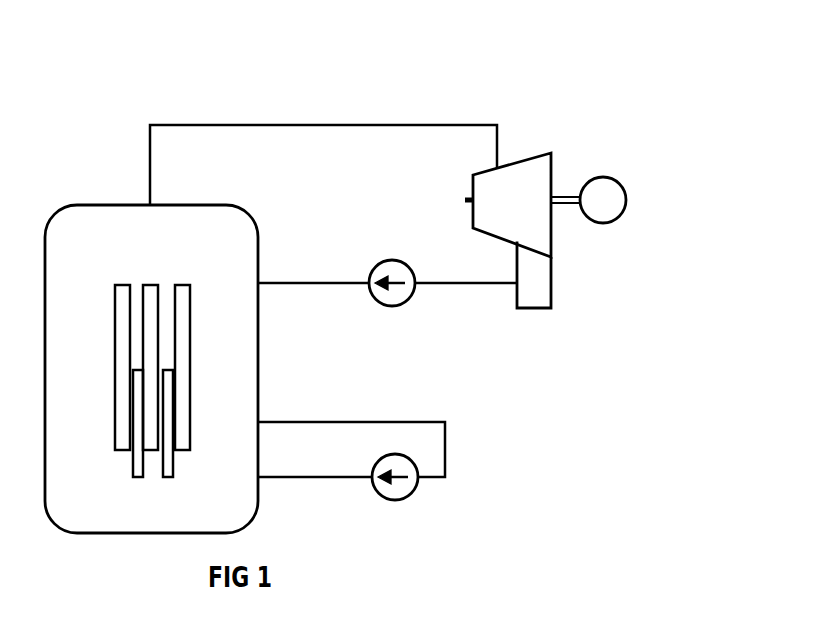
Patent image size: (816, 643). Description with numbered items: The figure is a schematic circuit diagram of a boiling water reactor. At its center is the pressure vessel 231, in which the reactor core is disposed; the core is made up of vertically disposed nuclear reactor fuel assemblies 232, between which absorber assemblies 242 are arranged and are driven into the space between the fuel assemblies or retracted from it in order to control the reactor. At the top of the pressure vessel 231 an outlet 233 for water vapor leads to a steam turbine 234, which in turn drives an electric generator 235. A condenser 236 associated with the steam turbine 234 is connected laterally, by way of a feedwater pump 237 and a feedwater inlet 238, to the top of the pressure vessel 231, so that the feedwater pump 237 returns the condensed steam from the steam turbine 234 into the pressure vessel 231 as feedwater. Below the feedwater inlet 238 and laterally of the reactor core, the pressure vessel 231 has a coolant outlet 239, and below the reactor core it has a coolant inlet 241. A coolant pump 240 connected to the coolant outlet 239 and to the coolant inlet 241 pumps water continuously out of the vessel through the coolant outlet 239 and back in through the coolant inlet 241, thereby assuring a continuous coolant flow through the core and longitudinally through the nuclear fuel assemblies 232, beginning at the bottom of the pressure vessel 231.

The pressure vessel 231 is at (112, 535).
The nuclear reactor fuel assemblies 232 is at (185, 381).
The outlet for water vapor 233 is at (200, 124).
The steam turbine 234 is at (523, 158).
The electric generator 235 is at (594, 183).
The condenser 236 is at (530, 310).
The feedwater pump 237 is at (383, 259).
The feedwater inlet 238 is at (308, 286).
The coolant outlet 239 is at (316, 420).
The coolant pump 240 is at (385, 502).
The coolant inlet 241 is at (308, 480).
The absorber assemblies 242 is at (168, 468).